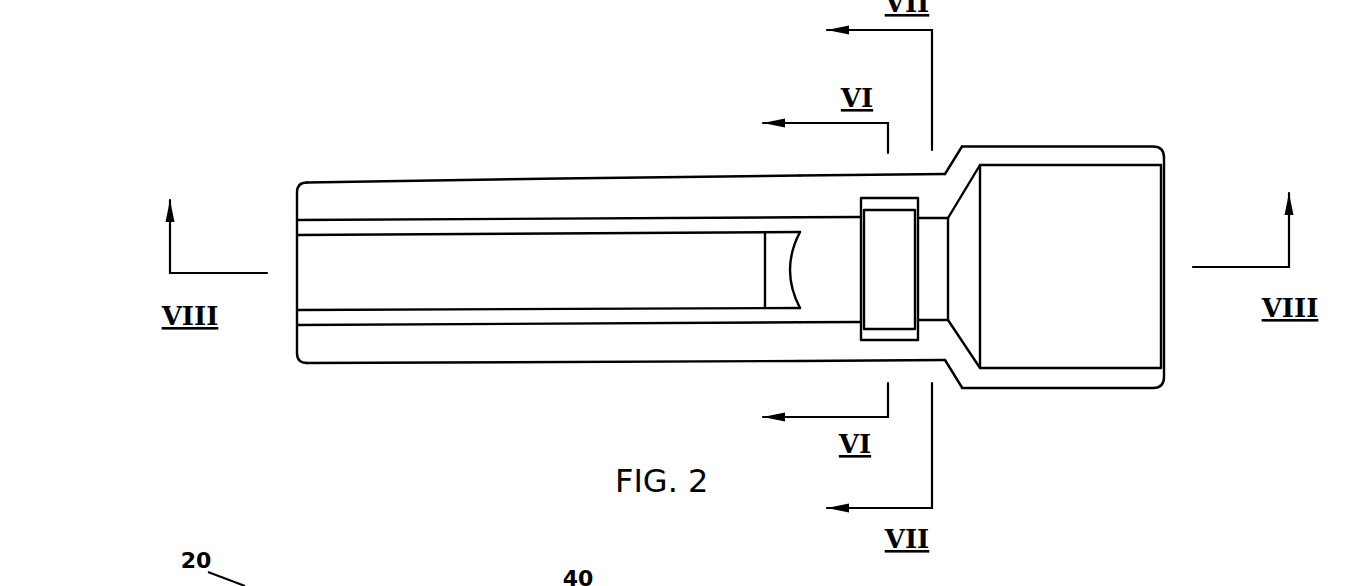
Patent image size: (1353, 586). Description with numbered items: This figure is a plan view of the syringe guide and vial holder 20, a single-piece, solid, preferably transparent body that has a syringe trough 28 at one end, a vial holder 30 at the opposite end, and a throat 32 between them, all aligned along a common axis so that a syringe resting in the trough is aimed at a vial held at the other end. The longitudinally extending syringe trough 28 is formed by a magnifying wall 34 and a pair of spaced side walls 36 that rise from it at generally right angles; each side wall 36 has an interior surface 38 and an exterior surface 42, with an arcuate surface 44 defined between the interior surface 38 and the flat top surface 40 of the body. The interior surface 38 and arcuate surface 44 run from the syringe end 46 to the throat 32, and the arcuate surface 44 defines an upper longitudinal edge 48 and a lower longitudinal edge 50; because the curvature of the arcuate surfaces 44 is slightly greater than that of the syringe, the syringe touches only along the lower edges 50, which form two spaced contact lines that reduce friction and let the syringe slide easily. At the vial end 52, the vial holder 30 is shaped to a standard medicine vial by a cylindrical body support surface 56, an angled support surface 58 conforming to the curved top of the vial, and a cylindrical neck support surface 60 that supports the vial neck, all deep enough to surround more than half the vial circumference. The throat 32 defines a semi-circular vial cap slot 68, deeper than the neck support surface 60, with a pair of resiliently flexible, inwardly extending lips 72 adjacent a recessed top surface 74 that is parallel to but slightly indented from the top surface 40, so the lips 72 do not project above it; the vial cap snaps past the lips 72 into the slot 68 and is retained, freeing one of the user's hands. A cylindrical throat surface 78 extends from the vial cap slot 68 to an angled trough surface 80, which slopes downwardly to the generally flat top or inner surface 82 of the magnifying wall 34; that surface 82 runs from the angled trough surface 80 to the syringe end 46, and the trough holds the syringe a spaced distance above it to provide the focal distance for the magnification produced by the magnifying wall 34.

The syringe guide and vial holder 20 is at (218, 117).
The syringe trough 28 is at (509, 178).
The vial holder 30 is at (986, 147).
The throat 32 is at (827, 204).
The magnifying wall 34 is at (320, 252).
The side walls 36 is at (345, 200).
The interior surface 38 is at (345, 236).
The top surface 40 is at (1032, 158).
The exterior surface 42 is at (578, 178).
The arcuate surface 44 is at (423, 228).
The syringe end 46 is at (295, 287).
The upper longitudinal edge 48 is at (547, 222).
The lower longitudinal edge 50 is at (462, 237).
The vial end 52 is at (1163, 310).
The body support surface 56 is at (1122, 193).
The angled support surface 58 is at (963, 255).
The neck support surface 60 is at (937, 248).
The vial cap slot 68 is at (907, 292).
The lips 72 is at (890, 327).
The recessed top surface 74 is at (880, 203).
The cylindrical throat surface 78 is at (833, 245).
The angled trough surface 80 is at (775, 275).
The top or inner surface of magnifying wall 82 is at (644, 270).